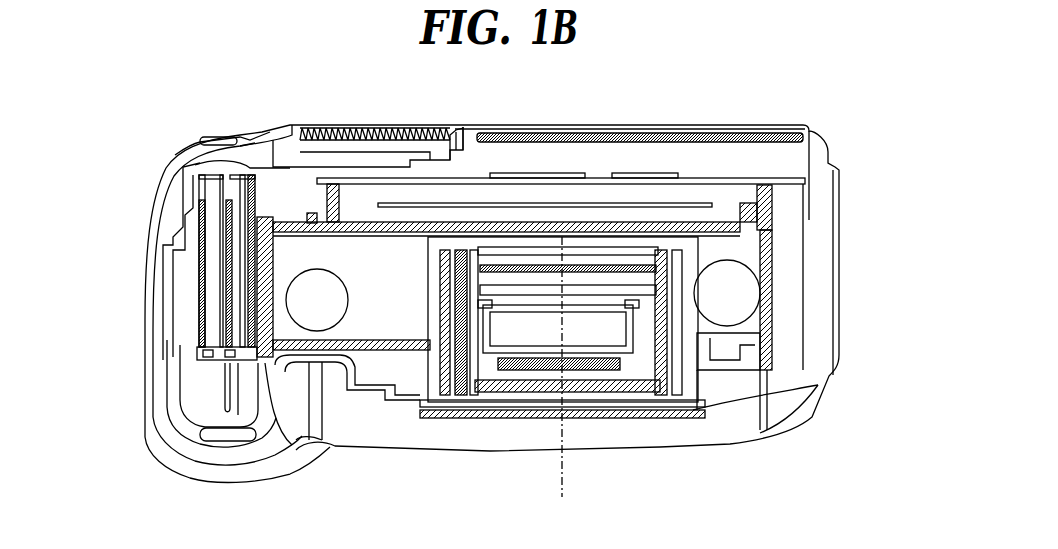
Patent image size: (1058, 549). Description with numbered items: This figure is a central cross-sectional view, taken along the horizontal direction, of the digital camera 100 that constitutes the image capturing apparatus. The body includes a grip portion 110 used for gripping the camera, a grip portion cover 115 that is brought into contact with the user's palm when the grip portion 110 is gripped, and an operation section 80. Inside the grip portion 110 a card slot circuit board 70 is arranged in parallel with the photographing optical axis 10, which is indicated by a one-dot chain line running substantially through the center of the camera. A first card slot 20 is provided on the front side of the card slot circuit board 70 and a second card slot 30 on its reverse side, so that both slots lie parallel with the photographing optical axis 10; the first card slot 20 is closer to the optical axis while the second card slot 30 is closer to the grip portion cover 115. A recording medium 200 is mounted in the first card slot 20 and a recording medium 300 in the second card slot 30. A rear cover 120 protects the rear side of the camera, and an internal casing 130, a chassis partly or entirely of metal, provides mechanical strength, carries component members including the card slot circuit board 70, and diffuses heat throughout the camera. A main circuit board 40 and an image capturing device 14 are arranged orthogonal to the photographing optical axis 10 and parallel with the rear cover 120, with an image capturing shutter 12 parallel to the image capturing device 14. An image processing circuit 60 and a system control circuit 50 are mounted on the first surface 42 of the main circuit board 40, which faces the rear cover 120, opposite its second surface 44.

The photographing optical axis 10 is at (575, 490).
The image capturing shutter 12 is at (672, 243).
The image capturing device 14 is at (675, 213).
The first card slot 20 is at (233, 387).
The second card slot 30 is at (225, 367).
The main circuit board 40 is at (733, 182).
The first surface 42 is at (693, 165).
The second surface 44 is at (720, 188).
The system control circuit 50 is at (647, 173).
The image processing circuit 60 is at (547, 173).
The card slot circuit board 70 is at (245, 415).
The operation section 80 is at (397, 122).
The digital camera 100 is at (848, 147).
The grip portion 110 is at (207, 462).
The grip portion cover 115 is at (143, 312).
The rear cover 120 is at (463, 124).
The internal casing 130 is at (270, 270).
The recording medium 200 is at (242, 177).
The recording medium 300 is at (212, 177).